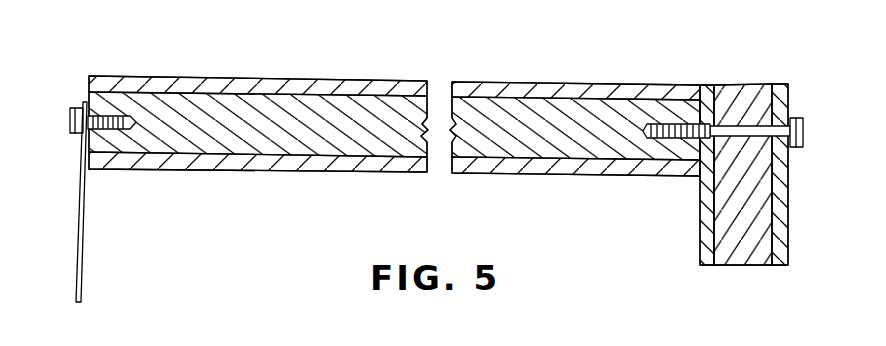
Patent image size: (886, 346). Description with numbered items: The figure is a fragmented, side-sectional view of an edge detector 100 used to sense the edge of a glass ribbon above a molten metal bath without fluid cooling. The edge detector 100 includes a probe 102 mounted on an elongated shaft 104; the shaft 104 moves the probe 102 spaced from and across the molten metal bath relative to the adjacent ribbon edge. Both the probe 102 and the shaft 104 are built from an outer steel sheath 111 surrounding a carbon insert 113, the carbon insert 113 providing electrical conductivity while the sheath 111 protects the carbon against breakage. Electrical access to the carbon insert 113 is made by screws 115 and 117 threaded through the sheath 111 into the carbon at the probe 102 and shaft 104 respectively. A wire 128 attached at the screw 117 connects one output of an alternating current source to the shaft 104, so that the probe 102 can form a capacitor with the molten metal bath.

The edge detector 100 is at (309, 178).
The probe 102 is at (687, 260).
The elongated shaft 104 is at (514, 66).
The outer steel sheath 111 is at (388, 88).
The carbon insert 113 is at (262, 113).
The screw 115 is at (805, 126).
The screw 117 is at (70, 113).
The wire 128 is at (79, 233).